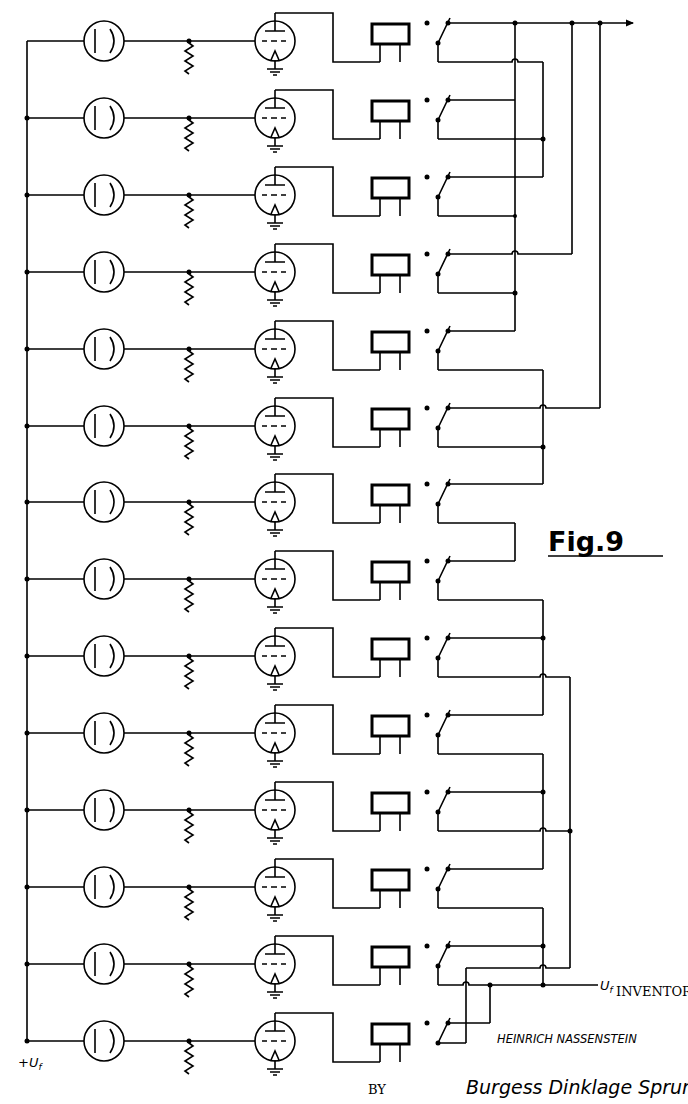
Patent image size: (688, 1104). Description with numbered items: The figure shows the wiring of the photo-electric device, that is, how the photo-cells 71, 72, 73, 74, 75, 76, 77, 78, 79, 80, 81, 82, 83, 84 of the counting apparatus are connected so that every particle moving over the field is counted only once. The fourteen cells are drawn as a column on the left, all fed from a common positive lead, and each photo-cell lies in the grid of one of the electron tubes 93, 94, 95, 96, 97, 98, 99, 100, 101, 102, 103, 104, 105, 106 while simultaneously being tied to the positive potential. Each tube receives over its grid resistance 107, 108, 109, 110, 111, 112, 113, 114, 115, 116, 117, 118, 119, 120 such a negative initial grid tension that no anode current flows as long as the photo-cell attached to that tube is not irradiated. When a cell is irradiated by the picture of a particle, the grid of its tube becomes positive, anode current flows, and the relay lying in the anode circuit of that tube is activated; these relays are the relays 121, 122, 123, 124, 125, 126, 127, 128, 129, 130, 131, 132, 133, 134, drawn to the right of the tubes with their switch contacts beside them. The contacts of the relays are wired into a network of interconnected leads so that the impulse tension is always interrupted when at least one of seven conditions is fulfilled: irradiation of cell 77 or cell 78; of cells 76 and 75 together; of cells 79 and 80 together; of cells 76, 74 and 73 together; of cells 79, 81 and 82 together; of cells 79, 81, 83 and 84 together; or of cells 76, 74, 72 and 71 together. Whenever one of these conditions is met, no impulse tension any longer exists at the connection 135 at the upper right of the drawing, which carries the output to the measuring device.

The photo-cell 71 is at (120, 1027).
The photo-cell 72 is at (120, 950).
The photo-cell 73 is at (120, 873).
The photo-cell 74 is at (120, 796).
The photo-cell 75 is at (120, 719).
The photo-cell 76 is at (120, 642).
The photo-cell 77 is at (120, 565).
The photo-cell 78 is at (120, 488).
The photo-cell 79 is at (120, 412).
The photo-cell 80 is at (120, 335).
The photo-cell 81 is at (120, 258).
The photo-cell 82 is at (120, 181).
The photo-cell 83 is at (120, 104).
The photo-cell 84 is at (120, 27).
The electron tube 93 is at (258, 1034).
The electron tube 94 is at (258, 957).
The electron tube 95 is at (258, 880).
The electron tube 96 is at (258, 803).
The electron tube 97 is at (258, 726).
The electron tube 98 is at (258, 649).
The electron tube 99 is at (258, 572).
The electron tube 100 is at (258, 495).
The electron tube 101 is at (258, 419).
The electron tube 102 is at (258, 342).
The electron tube 103 is at (258, 265).
The electron tube 104 is at (258, 188).
The electron tube 105 is at (258, 111).
The electron tube 106 is at (258, 34).
The grid resistance 107 is at (192, 1059).
The grid resistance 108 is at (192, 982).
The grid resistance 109 is at (192, 905).
The grid resistance 110 is at (192, 828).
The grid resistance 111 is at (192, 751).
The grid resistance 112 is at (192, 674).
The grid resistance 113 is at (192, 597).
The grid resistance 114 is at (192, 520).
The grid resistance 115 is at (192, 444).
The grid resistance 116 is at (192, 367).
The grid resistance 117 is at (192, 290).
The grid resistance 118 is at (192, 213).
The grid resistance 119 is at (192, 136).
The grid resistance 120 is at (192, 59).
The relay 121 is at (372, 1027).
The relay 122 is at (372, 950).
The relay 123 is at (372, 873).
The relay 124 is at (372, 796).
The relay 125 is at (372, 719).
The relay 126 is at (372, 642).
The relay 127 is at (372, 565).
The relay 128 is at (372, 488).
The relay 129 is at (372, 412).
The relay 130 is at (372, 335).
The relay 131 is at (372, 258).
The relay 132 is at (372, 181).
The relay 133 is at (372, 104).
The relay 134 is at (372, 27).
The connection 135 is at (621, 32).